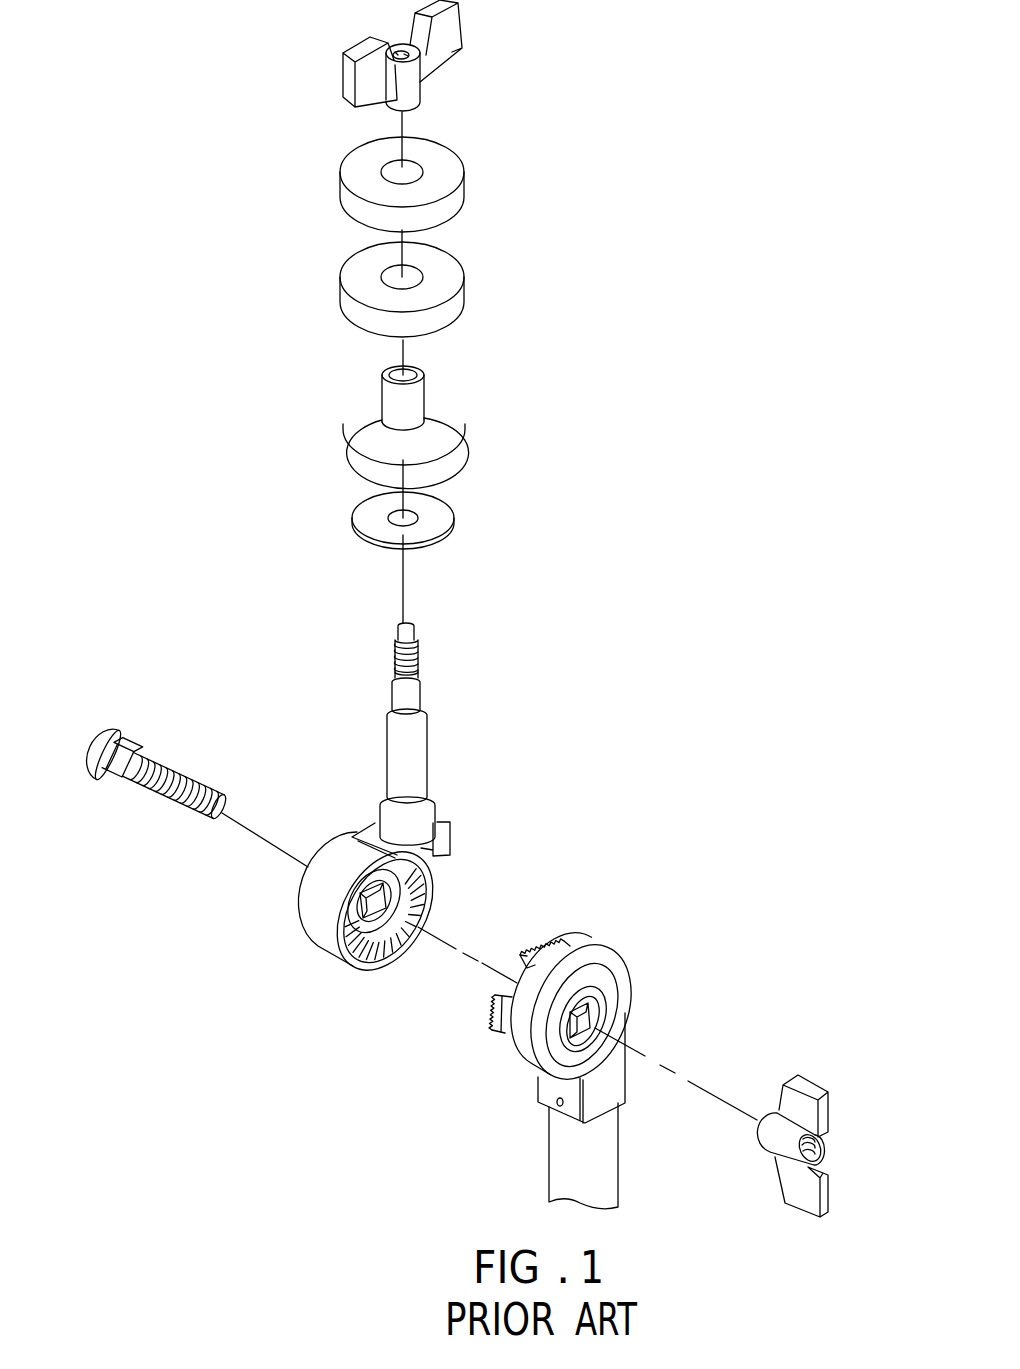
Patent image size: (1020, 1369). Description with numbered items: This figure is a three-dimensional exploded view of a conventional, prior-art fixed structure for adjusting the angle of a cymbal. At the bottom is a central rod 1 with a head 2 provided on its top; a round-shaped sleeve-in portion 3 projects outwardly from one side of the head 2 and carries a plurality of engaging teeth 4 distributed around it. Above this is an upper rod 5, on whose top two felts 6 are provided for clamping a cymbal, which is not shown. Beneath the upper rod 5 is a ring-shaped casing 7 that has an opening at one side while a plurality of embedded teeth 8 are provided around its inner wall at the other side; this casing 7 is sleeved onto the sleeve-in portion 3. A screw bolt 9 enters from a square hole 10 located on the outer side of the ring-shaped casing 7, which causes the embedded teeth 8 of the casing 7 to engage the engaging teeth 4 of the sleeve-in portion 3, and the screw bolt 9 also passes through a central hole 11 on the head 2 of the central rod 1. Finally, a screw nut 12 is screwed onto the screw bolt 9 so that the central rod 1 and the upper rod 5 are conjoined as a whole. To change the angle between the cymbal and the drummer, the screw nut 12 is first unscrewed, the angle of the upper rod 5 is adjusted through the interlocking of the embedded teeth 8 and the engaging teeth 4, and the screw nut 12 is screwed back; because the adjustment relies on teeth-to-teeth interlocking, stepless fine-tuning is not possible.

The central rod 1 is at (568, 1183).
The head 2 is at (610, 967).
The sleeve-in portion 3 is at (497, 1018).
The engaging teeth 4 is at (540, 938).
The upper rod 5 is at (415, 697).
The felts 6 is at (452, 200).
The ring-shaped casing 7 is at (340, 838).
The embedded teeth 8 is at (427, 900).
The screw bolt 9 is at (115, 730).
The square hole 10 is at (363, 897).
The central hole 11 is at (590, 1013).
The screw nut 12 is at (828, 1110).